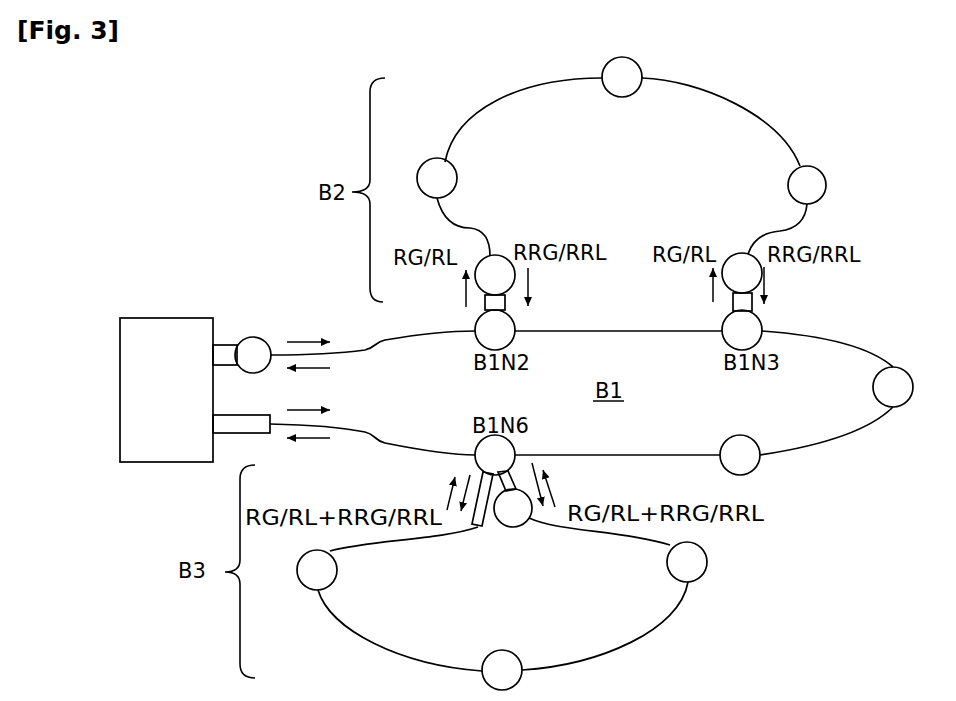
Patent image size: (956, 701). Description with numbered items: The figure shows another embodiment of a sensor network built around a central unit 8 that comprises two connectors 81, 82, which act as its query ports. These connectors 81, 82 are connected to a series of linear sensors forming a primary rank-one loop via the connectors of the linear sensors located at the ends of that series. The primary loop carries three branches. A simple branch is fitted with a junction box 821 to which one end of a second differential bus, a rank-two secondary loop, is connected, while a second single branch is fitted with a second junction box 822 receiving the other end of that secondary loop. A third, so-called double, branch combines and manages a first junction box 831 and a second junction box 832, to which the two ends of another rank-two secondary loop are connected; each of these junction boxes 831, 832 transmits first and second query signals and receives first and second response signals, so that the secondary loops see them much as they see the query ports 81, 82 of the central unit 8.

The central unit 8 is at (166, 390).
The connector 81 is at (224, 355).
The connector 82 is at (223, 426).
The junction box 821 is at (490, 300).
The second junction box 822 is at (745, 298).
The first junction box 831 is at (549, 480).
The second junction box 832 is at (450, 497).